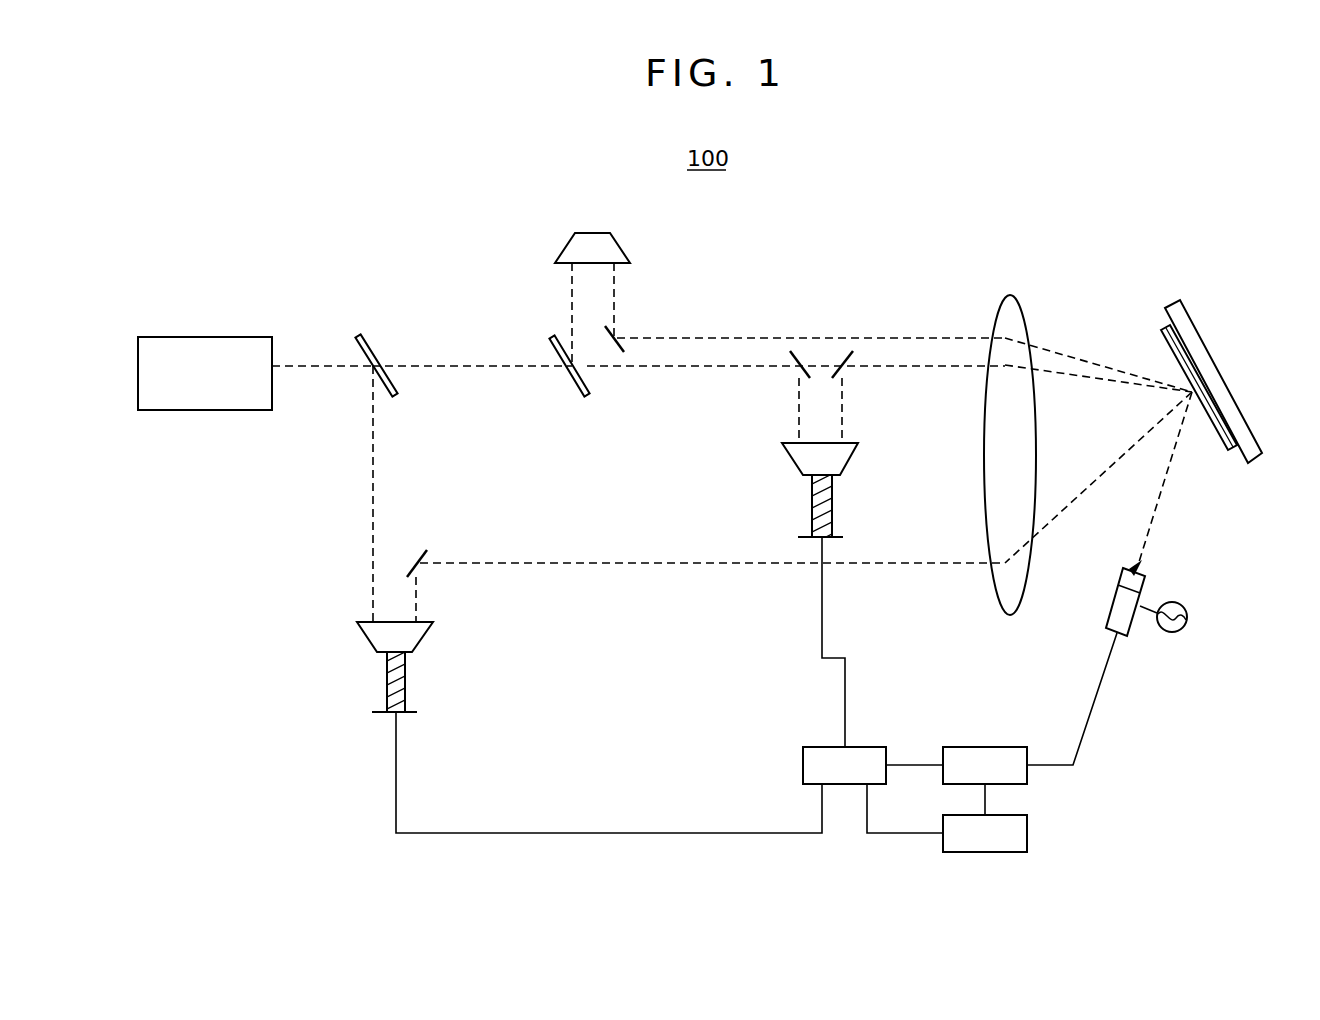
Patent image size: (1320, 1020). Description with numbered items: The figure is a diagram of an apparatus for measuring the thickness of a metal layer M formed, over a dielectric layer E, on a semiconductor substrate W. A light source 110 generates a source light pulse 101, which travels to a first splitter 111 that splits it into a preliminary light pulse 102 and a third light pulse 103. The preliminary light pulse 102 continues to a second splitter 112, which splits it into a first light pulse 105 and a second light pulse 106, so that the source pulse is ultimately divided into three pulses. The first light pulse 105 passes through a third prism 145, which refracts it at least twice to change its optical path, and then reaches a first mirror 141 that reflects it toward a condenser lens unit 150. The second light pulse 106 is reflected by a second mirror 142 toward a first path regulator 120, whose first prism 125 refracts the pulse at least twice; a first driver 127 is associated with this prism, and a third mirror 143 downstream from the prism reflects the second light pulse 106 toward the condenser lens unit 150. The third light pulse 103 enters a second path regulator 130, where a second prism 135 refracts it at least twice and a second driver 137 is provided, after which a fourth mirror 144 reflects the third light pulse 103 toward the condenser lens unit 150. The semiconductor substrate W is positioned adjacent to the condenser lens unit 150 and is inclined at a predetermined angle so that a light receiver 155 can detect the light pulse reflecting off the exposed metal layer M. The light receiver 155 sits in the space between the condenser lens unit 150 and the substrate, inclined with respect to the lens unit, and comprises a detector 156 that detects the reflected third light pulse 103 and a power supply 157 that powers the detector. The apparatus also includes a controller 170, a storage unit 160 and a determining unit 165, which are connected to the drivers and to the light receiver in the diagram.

The light source 110 is at (205, 410).
The source light pulse 101 is at (318, 370).
The preliminary light pulse 102 is at (450, 370).
The third light pulse 103 is at (371, 488).
The first light pulse 105 is at (570, 306).
The second light pulse 106 is at (667, 370).
The first splitter 111 is at (362, 336).
The second splitter 112 is at (578, 390).
The first path regulator 120 is at (718, 455).
The first prism 125 is at (796, 458).
The first driver 127 is at (810, 500).
The second path regulator 130 is at (292, 630).
The second prism 135 is at (372, 634).
The second driver 137 is at (386, 677).
The first mirror 141 is at (612, 334).
The second mirror 142 is at (797, 350).
The third mirror 143 is at (846, 350).
The fourth mirror 144 is at (418, 556).
The third prism 145 is at (566, 252).
The condenser lens unit 150 is at (1010, 294).
The light receiver 155 is at (1170, 582).
The detector 156 is at (1108, 621).
The power supply 157 is at (1188, 617).
The storage unit 160 is at (985, 746).
The determining unit 165 is at (985, 853).
The controller 170 is at (802, 765).
The semiconductor substrate W is at (1208, 340).
The dielectric layer E is at (1166, 326).
The metal layer M is at (1162, 328).